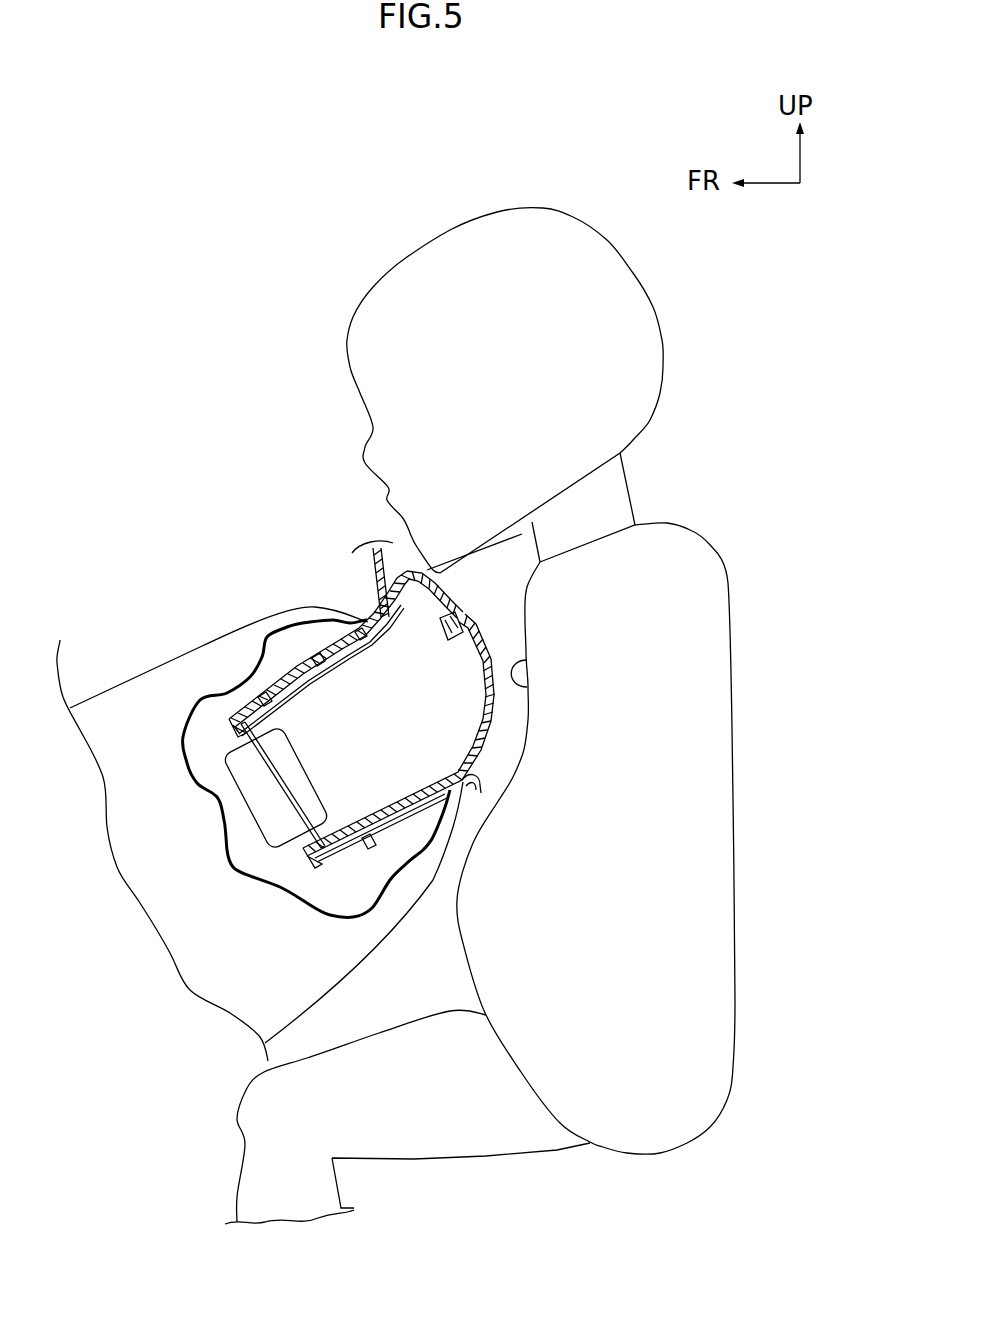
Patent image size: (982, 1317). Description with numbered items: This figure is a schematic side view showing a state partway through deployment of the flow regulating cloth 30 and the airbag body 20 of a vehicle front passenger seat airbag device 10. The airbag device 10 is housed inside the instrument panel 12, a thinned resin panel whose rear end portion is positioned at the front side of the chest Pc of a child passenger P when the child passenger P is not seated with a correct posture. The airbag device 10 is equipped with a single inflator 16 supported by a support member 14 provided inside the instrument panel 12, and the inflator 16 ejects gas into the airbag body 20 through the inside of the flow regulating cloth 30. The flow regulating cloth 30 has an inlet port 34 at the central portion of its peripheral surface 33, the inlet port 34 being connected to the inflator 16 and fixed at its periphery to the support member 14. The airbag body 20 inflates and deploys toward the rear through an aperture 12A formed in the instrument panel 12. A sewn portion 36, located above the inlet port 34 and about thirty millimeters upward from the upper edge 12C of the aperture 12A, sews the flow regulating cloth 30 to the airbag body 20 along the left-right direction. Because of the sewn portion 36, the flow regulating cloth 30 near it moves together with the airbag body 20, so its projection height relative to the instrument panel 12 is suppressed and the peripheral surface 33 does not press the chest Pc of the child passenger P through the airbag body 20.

The child passenger P is at (547, 208).
The chest Pc is at (528, 683).
The vehicle front passenger seat airbag device 10 is at (450, 870).
The instrument panel 12 is at (193, 647).
The aperture 12A is at (474, 778).
The upper edge 12C is at (367, 617).
The support member 14 is at (233, 717).
The inflator 16 is at (277, 820).
The airbag body 20 is at (372, 572).
The flow regulating cloth 30 is at (489, 635).
The peripheral surface 33 is at (448, 588).
The inlet port 34 is at (280, 845).
The sewn portion 36 is at (373, 598).